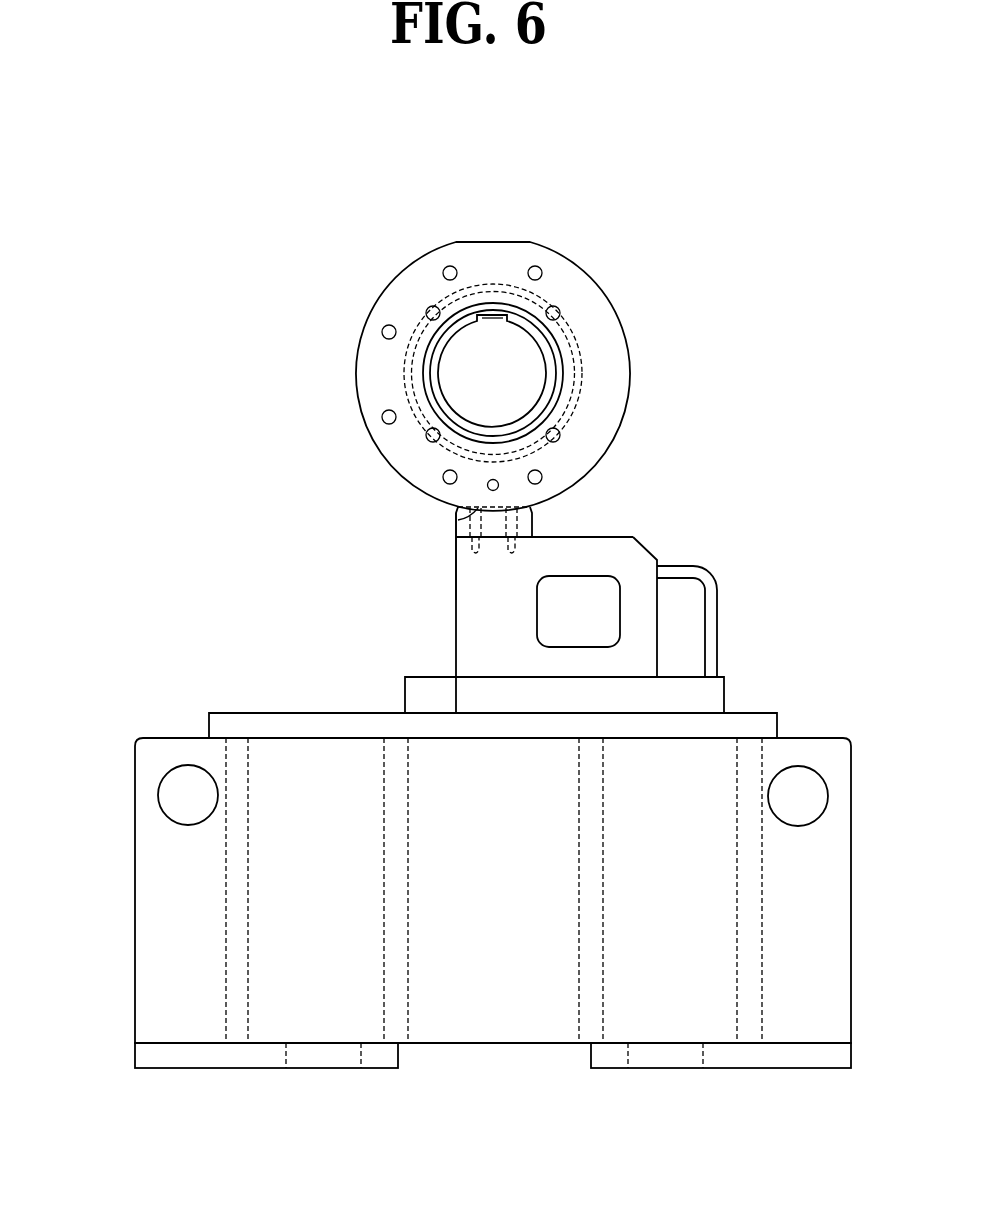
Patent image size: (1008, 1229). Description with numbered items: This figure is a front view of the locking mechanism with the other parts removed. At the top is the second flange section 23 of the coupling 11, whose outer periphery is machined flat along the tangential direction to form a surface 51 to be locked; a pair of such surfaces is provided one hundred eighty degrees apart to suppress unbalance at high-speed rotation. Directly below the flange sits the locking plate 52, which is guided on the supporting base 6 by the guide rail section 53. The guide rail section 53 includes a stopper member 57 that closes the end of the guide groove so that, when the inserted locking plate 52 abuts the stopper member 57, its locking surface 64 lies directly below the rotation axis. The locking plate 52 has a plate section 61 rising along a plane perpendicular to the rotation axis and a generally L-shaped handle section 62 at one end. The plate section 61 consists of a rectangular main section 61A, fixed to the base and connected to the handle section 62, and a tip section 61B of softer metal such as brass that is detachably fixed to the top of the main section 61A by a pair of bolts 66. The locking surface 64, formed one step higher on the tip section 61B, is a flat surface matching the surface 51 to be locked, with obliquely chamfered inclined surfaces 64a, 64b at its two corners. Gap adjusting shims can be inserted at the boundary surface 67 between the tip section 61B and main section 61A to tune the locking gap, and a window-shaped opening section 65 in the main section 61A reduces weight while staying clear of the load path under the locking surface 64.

The supporting base 6 is at (155, 1000).
The coupling 11 is at (492, 371).
The second flange section 23 is at (573, 293).
The surface to be locked 51 is at (492, 241).
The locking plate 52 is at (575, 591).
The guide rail section 53 is at (573, 702).
The stopper member 57 is at (428, 700).
The plate section 61 is at (450, 610).
The main section 61A is at (463, 560).
The tip section 61B is at (463, 528).
The handle section 62 is at (708, 622).
The locking surface 64 is at (493, 490).
The inclined surface 64a is at (457, 507).
The inclined surface 64b is at (493, 508).
The opening section 65 is at (547, 620).
The bolt 66 is at (458, 520).
The boundary surface 67 is at (497, 538).